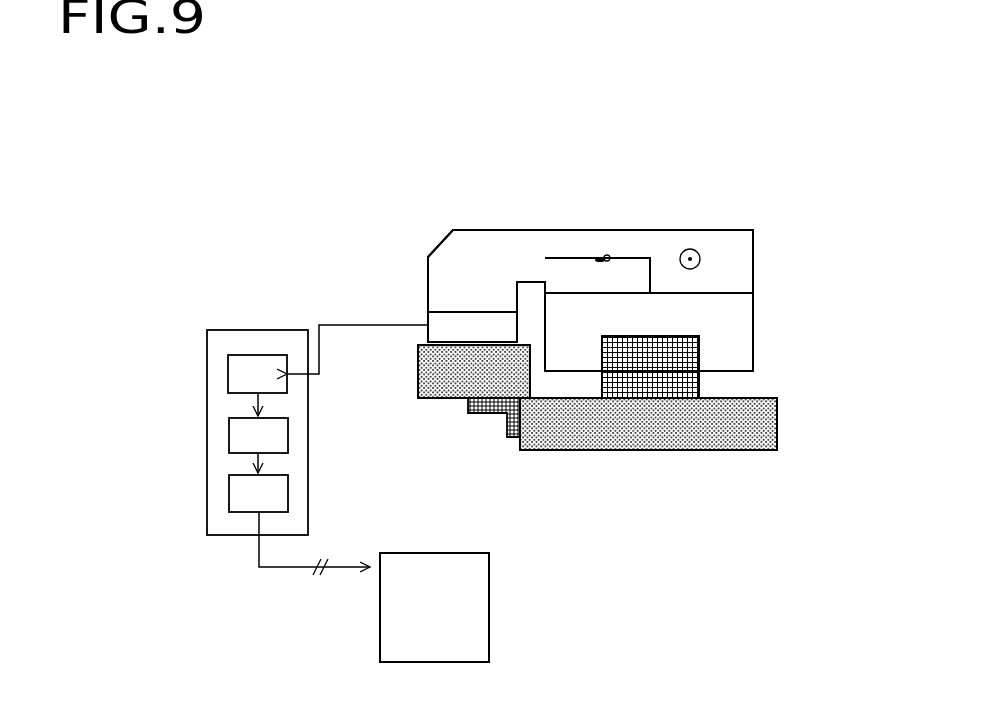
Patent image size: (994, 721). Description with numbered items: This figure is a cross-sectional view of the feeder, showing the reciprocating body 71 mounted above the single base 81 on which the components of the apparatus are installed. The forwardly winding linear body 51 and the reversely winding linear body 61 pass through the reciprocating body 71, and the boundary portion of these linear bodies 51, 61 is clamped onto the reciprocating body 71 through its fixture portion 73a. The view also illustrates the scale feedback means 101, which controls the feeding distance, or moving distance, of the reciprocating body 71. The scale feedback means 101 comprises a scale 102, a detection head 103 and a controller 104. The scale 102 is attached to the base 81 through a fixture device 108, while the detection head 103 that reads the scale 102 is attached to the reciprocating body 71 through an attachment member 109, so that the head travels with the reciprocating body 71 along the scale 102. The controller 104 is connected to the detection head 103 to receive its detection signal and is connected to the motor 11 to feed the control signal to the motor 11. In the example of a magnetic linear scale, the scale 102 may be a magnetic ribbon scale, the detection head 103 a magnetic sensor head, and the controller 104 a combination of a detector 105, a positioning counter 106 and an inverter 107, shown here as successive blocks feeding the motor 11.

The motor 11 is at (402, 625).
The forwardly winding linear body 51 is at (598, 259).
The reversely winding linear body 61 is at (696, 254).
The reciprocating body 71 is at (758, 302).
The fixture portion 73a is at (608, 255).
The base 81 is at (668, 376).
The scale feedback means 101 is at (457, 483).
The scale 102 is at (425, 373).
The detection head 103 is at (445, 325).
The controller 104 is at (240, 327).
The detector 105 is at (260, 363).
The positioning counter 106 is at (273, 438).
The inverter 107 is at (277, 487).
The fixture device 108 is at (509, 414).
The attachment member 109 is at (447, 267).